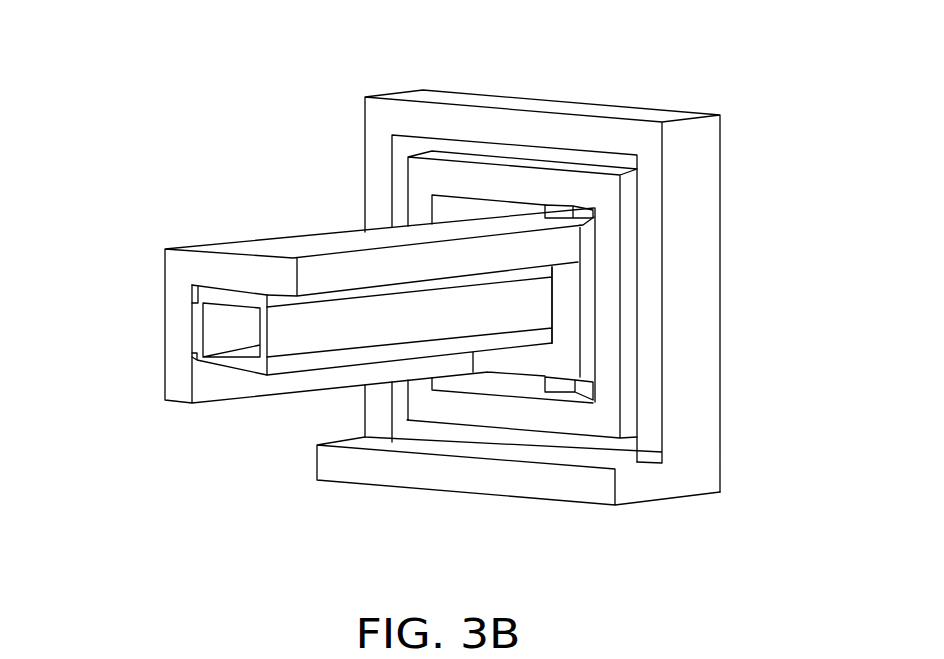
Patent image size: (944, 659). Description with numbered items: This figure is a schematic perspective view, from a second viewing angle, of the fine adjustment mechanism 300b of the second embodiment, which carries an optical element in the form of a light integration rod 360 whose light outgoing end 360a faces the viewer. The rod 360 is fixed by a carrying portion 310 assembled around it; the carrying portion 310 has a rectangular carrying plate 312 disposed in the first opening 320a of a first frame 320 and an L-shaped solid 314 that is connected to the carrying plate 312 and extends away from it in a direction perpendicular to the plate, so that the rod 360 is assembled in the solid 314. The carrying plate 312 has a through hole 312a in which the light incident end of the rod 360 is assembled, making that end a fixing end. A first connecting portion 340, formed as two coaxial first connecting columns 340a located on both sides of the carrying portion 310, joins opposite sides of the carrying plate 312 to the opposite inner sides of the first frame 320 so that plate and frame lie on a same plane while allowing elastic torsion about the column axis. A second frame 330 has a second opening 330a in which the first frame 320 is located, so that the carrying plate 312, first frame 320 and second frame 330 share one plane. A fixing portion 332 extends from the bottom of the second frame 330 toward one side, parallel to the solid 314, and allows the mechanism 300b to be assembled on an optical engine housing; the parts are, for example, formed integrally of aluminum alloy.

The fine adjustment mechanism 300b is at (420, 310).
The carrying portion 310 is at (488, 440).
The carrying plate 312 is at (510, 356).
The through hole 312a is at (563, 323).
The solid 314 is at (238, 388).
The first frame 320 is at (603, 187).
The first opening 320a is at (506, 195).
The second frame 330 is at (655, 145).
The second opening 330a is at (463, 135).
The fixing portion 332 is at (500, 491).
The first connecting portion 340 is at (561, 212).
The first connecting columns 340a is at (561, 385).
The light integration rod 360 is at (285, 318).
The light outgoing end 360a is at (214, 340).